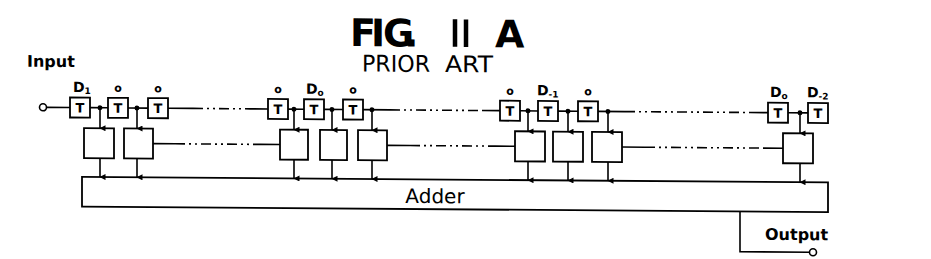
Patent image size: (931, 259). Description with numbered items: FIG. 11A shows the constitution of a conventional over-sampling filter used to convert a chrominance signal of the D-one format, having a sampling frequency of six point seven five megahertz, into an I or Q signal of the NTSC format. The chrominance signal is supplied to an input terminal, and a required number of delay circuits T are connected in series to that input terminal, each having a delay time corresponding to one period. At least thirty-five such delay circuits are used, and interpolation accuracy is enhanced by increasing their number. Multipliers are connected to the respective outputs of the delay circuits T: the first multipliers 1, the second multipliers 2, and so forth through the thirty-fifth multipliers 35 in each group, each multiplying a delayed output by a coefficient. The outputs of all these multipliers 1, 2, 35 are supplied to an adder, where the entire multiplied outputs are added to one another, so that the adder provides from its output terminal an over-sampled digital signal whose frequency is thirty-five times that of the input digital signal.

The multiplier 1 is at (333, 145).
The multiplier 2 is at (373, 145).
The multiplier 35 is at (546, 147).